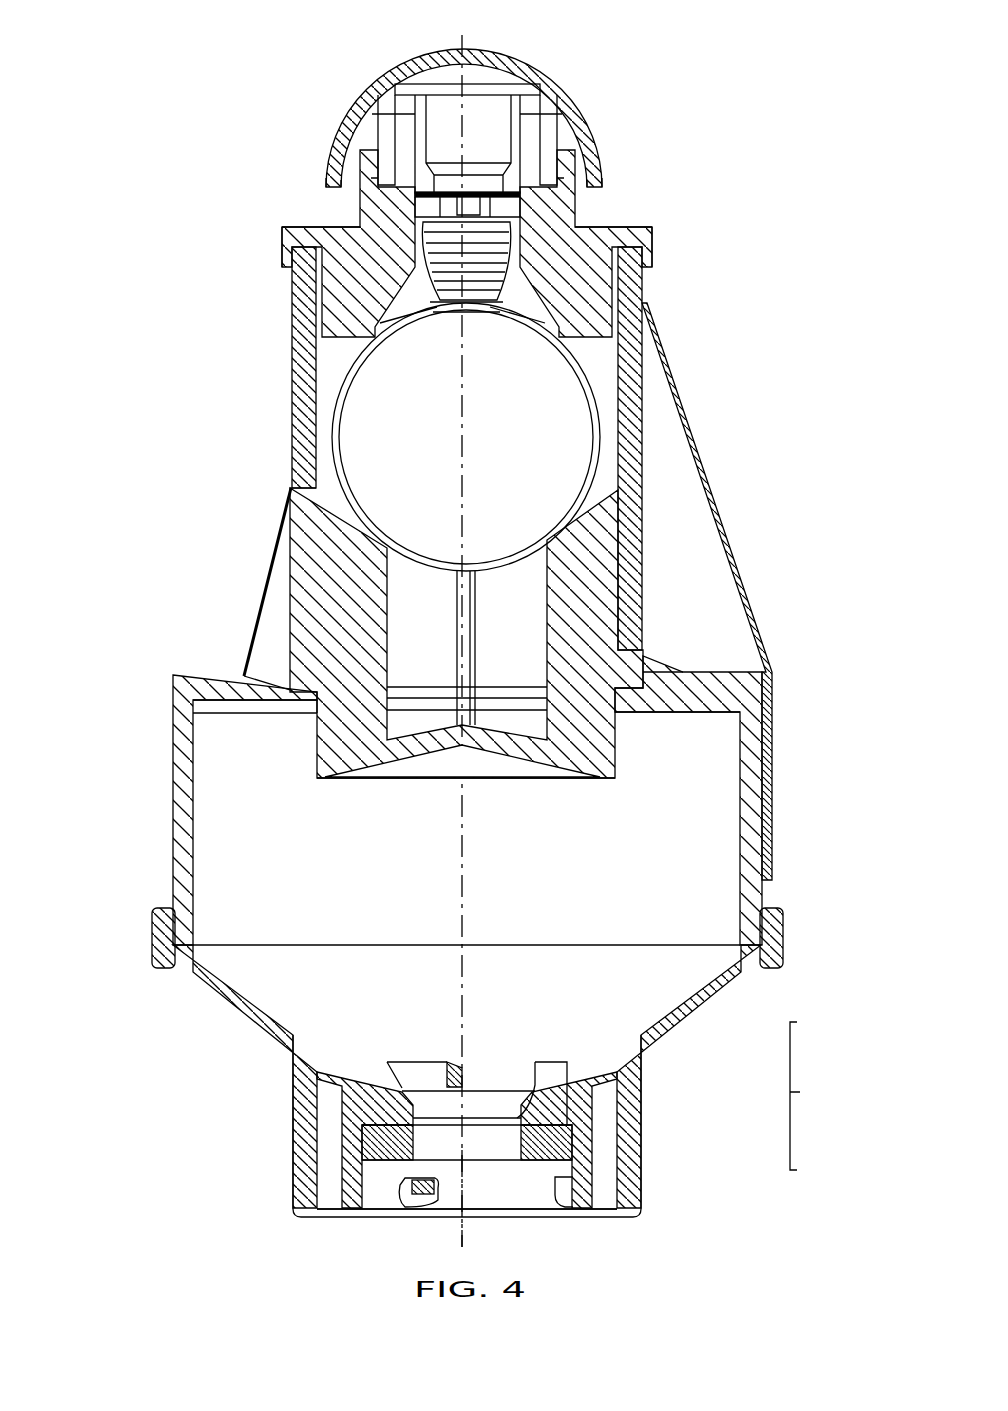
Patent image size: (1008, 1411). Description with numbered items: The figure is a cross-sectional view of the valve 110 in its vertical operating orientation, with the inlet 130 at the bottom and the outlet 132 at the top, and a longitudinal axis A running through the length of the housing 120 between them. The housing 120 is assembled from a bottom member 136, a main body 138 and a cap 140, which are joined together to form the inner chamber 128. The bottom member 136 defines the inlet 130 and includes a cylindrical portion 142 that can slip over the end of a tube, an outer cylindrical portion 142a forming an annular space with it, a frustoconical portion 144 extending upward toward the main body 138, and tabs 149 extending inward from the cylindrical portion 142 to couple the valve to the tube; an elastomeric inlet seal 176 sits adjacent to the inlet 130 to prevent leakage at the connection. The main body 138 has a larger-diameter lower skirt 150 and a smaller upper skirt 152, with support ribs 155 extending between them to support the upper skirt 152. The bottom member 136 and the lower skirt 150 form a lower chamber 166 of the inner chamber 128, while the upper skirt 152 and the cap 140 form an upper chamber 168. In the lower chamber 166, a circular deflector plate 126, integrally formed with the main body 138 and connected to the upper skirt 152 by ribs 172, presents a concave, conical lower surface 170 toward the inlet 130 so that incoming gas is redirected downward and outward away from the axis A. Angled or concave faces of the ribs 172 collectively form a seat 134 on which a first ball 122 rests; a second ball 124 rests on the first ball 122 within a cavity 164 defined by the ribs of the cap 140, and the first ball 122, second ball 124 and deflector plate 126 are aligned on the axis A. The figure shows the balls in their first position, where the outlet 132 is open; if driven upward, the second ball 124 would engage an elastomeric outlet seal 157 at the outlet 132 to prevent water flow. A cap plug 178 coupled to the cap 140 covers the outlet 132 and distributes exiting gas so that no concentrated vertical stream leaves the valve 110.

The valve 110 is at (129, 136).
The housing 120 is at (185, 350).
The first ball 122 is at (591, 368).
The second ball 124 is at (493, 213).
The deflector plate 126 is at (288, 667).
The inner chamber 128 is at (303, 927).
The inlet 130 is at (483, 1192).
The outlet 132 is at (475, 145).
The seat 134 is at (616, 530).
The bottom member 136 is at (817, 1096).
The main body 138 is at (263, 381).
The cap 140 is at (653, 233).
The cylindrical portion 142 is at (573, 1160).
The outer cylindrical portion 142a is at (642, 1098).
The frustoconical portion 144 is at (684, 1012).
The tabs 149 is at (410, 1215).
The lower skirt 150 is at (172, 739).
The upper skirt 152 is at (291, 313).
The support ribs 155 is at (732, 567).
The outlet seal 157 is at (378, 92).
The cavity 164 is at (560, 316).
The lower chamber 166 is at (685, 840).
The upper chamber 168 is at (393, 573).
The concave, conical lower surface 170 is at (390, 783).
The ribs 172 is at (478, 640).
The inlet seal 176 is at (380, 1162).
The cap plug 178 is at (580, 98).
The longitudinal axis A is at (460, 1193).